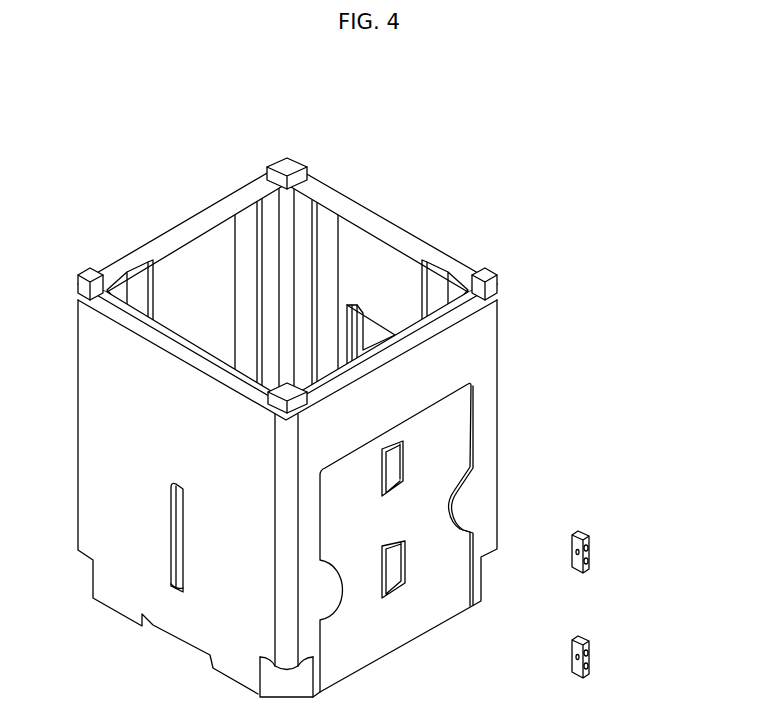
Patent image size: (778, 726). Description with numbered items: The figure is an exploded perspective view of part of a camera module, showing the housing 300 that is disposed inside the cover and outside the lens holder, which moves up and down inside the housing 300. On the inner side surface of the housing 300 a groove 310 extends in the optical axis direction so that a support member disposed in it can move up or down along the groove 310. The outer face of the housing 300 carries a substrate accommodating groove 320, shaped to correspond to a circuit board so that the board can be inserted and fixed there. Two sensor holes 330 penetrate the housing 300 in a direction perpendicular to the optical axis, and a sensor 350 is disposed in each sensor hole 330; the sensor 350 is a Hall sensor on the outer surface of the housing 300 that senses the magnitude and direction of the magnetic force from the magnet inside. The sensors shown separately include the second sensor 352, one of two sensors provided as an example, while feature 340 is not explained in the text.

The housing 300 is at (408, 193).
The groove 310 is at (318, 205).
The substrate accommodating groove 320 is at (443, 441).
The sensor hole 330 is at (385, 456).
The slot 340 is at (178, 543).
The sensor 350 is at (658, 604).
The second sensor 352 is at (587, 552).